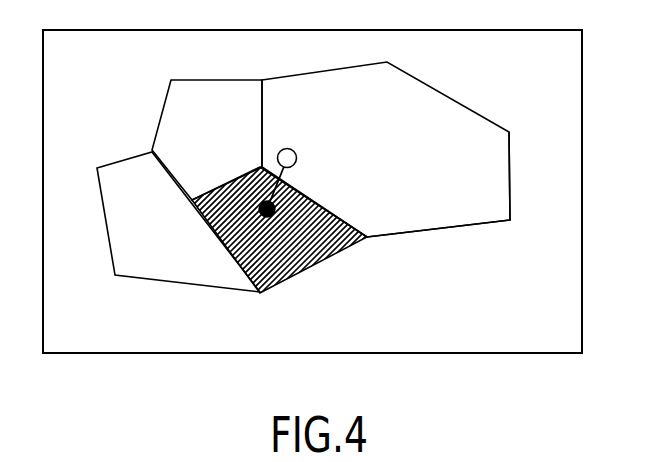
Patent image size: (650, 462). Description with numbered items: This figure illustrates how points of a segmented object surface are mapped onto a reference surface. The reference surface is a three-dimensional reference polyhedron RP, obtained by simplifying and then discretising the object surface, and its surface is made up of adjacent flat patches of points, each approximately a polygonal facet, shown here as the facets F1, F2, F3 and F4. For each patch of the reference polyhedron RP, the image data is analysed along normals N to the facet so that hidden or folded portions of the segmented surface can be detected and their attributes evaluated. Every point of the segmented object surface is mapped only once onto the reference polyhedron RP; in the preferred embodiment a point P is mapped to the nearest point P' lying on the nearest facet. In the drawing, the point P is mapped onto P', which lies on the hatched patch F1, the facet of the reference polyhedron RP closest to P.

The flat patch (facet) F1 is at (333, 253).
The flat patch (facet) F2 is at (477, 208).
The flat patch (facet) F3 is at (193, 125).
The flat patch (facet) F4 is at (152, 242).
The reference polyhedron RP is at (459, 84).
The normal N is at (283, 173).
The point of the segmented object surface P is at (292, 146).
The nearest point of the reference polyhedron P' is at (324, 198).